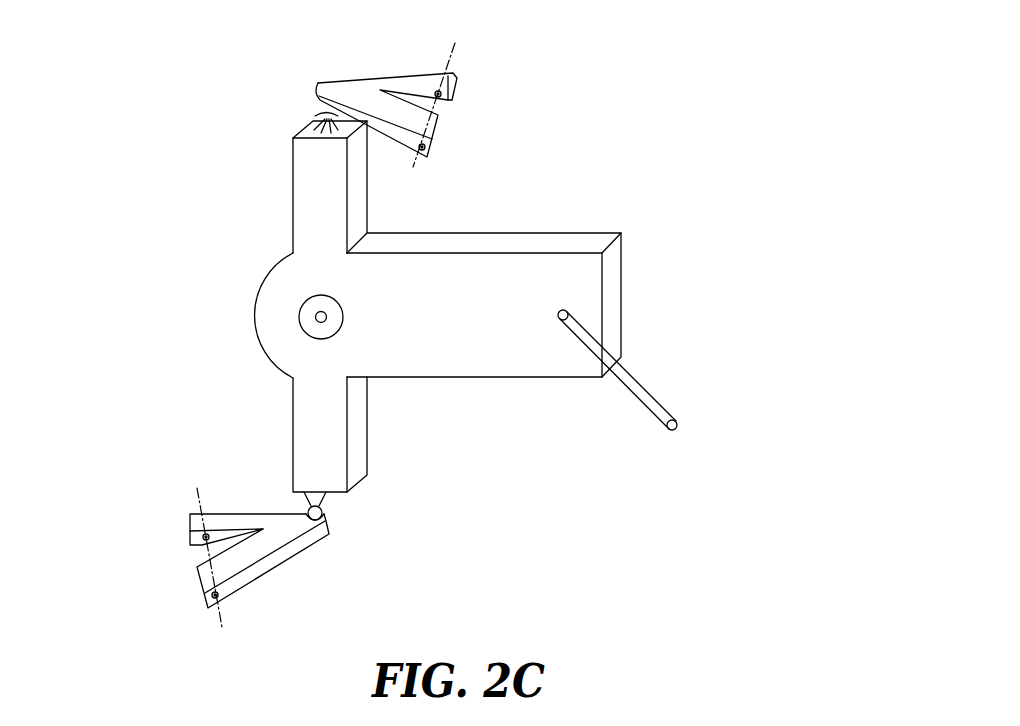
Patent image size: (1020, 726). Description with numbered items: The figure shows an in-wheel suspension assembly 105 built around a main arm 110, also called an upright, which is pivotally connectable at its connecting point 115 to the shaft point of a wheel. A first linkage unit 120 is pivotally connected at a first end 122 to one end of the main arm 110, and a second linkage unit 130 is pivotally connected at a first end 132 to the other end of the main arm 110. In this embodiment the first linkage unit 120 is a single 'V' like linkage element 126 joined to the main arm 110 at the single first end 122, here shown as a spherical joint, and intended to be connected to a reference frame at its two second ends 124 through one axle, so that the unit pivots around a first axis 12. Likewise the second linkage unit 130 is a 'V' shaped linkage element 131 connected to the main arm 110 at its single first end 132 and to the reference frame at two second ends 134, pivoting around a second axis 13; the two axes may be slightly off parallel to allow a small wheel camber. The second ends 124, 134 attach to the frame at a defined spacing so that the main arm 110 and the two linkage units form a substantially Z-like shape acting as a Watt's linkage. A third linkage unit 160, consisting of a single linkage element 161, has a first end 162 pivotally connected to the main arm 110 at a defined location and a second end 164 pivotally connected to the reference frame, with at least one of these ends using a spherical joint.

The suspension assembly 105 is at (193, 60).
The main arm 110 is at (300, 422).
The connecting point 115 is at (319, 317).
The first axis 12 is at (385, 123).
The first linkage unit 120 is at (350, 84).
The first end of first linkage unit 122 is at (321, 113).
The second ends of first linkage unit 124 is at (456, 88).
The 'V' like linkage element 126 is at (417, 80).
The third linkage unit 160 is at (688, 377).
The single linkage element 161 is at (607, 357).
The first end of third linkage unit 162 is at (563, 308).
The second end of third linkage unit 164 is at (675, 424).
The second axis 13 is at (260, 571).
The second linkage unit 130 is at (319, 561).
The 'V' shaped linkage element 131 is at (248, 571).
The first end of second linkage unit 132 is at (324, 512).
The second ends of second linkage unit 134 is at (191, 530).